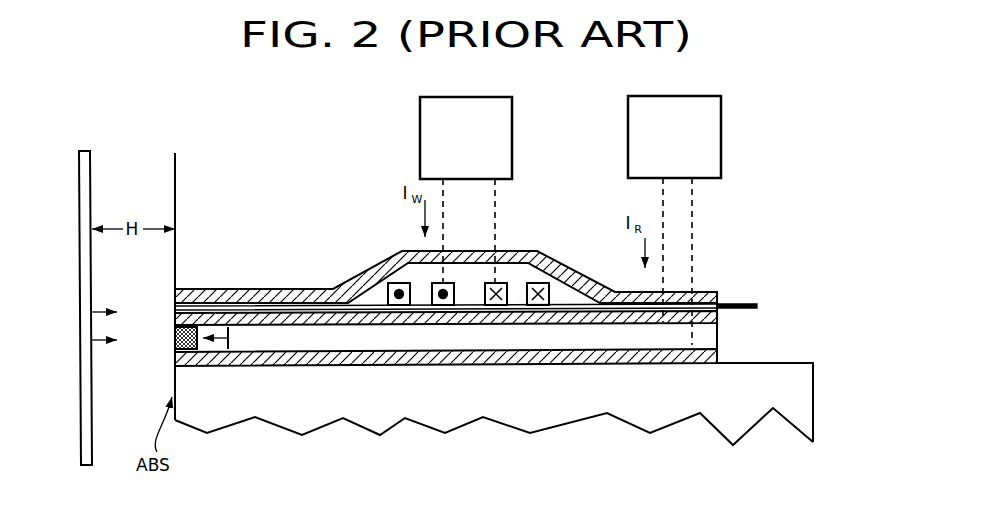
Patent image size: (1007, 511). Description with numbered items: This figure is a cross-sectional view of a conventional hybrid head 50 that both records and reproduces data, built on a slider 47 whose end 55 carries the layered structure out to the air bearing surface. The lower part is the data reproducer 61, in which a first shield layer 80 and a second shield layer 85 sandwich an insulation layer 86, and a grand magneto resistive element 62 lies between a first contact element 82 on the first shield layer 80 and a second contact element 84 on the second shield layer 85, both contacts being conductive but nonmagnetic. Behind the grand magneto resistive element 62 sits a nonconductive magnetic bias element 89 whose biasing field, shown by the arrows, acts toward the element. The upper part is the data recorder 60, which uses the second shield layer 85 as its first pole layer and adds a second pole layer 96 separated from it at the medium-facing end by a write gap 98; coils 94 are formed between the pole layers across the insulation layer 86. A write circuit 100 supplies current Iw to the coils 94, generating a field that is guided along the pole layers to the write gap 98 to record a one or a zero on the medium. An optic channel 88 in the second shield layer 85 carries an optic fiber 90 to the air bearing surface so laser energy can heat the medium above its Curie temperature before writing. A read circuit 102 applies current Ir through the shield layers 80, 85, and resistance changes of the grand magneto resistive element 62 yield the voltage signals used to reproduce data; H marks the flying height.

The slider 47 is at (401, 407).
The magnetic head 50 is at (318, 180).
The end of the slider 55 is at (212, 415).
The data recorder 60 is at (327, 270).
The data reproducer 61 is at (167, 377).
The grand magneto resistive element 62 is at (175, 338).
The first shield layer 80 is at (665, 355).
The first contact element 82 is at (175, 352).
The second contact element 84 is at (175, 325).
The second shield layer 85 is at (603, 318).
The insulation layer 86 is at (710, 335).
The optic channel 88 is at (513, 308).
The magnetic bias element 89 is at (226, 345).
The optic fiber 90 is at (746, 303).
The coils 94 is at (540, 251).
The second pole layer 96 is at (250, 297).
The write gap 98 is at (203, 302).
The write circuit 100 is at (420, 139).
The read circuit 102 is at (721, 133).